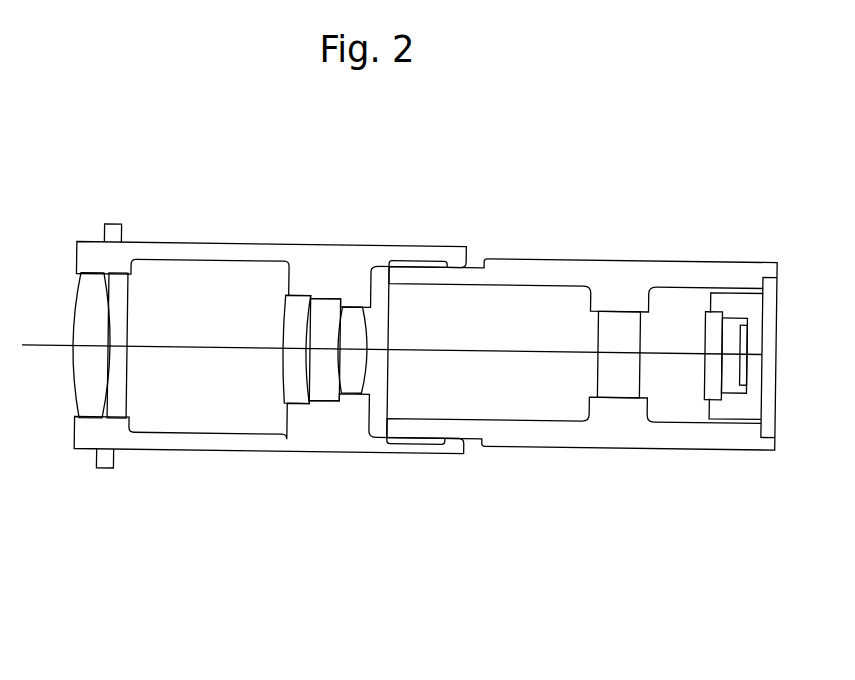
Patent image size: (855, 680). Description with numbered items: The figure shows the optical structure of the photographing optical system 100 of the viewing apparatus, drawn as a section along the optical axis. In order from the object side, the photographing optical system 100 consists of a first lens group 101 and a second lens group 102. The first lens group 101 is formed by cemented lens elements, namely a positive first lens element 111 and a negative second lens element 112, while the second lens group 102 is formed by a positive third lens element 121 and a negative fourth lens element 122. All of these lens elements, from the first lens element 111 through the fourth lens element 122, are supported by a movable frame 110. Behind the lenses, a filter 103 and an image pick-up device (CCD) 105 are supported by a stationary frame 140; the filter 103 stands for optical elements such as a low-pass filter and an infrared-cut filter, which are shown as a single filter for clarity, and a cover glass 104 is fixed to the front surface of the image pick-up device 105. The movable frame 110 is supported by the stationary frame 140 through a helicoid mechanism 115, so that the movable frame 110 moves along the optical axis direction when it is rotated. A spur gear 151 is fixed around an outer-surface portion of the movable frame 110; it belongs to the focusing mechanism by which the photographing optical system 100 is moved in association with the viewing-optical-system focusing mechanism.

The photographing optical system 100 is at (88, 570).
The first lens group 101 is at (65, 529).
The second lens group 102 is at (277, 529).
The filter 103 is at (615, 395).
The cover glass 104 is at (700, 397).
The image pick-up device (CCD) 105 is at (735, 286).
The movable frame 110 is at (250, 246).
The first lens element 111 is at (82, 424).
The second lens element 112 is at (112, 424).
The helicoid mechanism 115 is at (417, 262).
The third lens element 121 is at (300, 405).
The fourth lens element 122 is at (348, 398).
The stationary frame 140 is at (570, 266).
The spur gear 151 is at (103, 229).